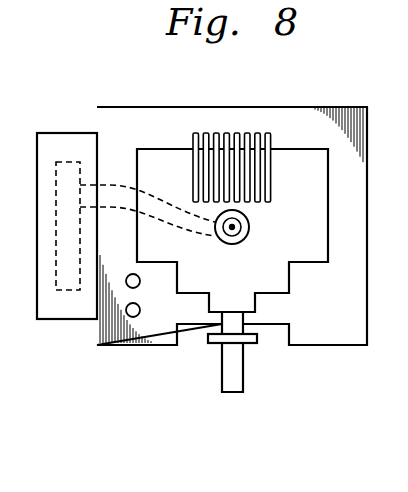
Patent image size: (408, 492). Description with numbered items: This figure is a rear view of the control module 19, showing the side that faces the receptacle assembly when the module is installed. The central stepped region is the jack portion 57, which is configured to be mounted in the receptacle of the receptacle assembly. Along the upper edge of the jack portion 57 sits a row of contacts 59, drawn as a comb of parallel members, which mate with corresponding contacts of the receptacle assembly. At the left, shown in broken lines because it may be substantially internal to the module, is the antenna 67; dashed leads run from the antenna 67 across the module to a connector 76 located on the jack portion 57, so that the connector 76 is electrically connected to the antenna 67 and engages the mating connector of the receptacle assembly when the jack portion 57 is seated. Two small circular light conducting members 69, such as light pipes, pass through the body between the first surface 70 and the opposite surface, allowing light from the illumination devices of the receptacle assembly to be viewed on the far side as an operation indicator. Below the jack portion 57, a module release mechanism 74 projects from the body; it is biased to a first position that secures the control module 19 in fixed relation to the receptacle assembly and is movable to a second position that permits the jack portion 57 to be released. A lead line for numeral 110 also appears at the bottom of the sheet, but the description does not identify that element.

The control module 19 is at (130, 84).
The jack portion 57 is at (314, 167).
The contacts 59 is at (195, 133).
The antenna 67 is at (68, 162).
The light conducting members 69 is at (140, 308).
The first surface 70 is at (343, 310).
The module release mechanism 74 is at (243, 368).
The connector 76 is at (249, 230).
The lead 110 is at (164, 491).